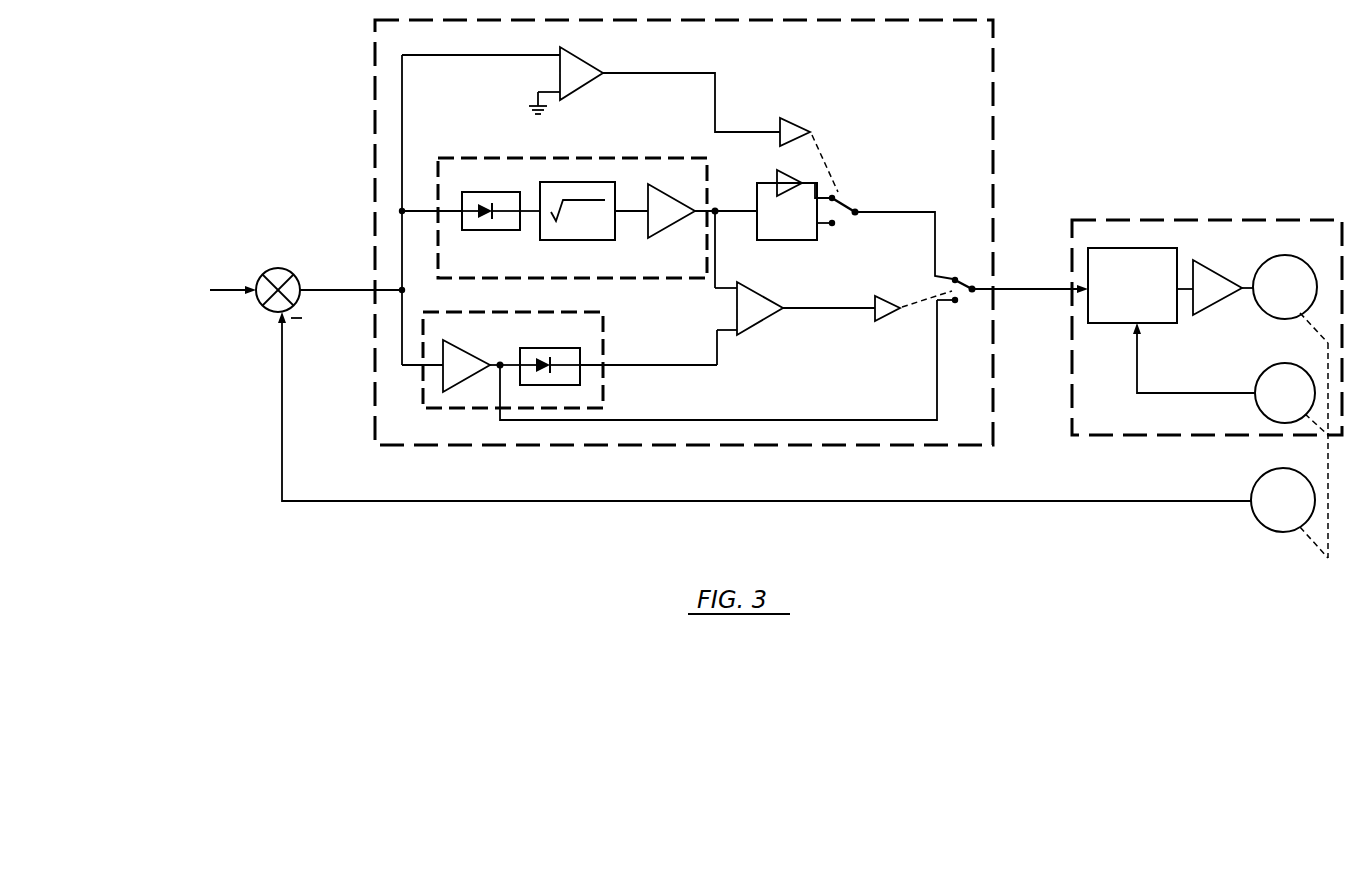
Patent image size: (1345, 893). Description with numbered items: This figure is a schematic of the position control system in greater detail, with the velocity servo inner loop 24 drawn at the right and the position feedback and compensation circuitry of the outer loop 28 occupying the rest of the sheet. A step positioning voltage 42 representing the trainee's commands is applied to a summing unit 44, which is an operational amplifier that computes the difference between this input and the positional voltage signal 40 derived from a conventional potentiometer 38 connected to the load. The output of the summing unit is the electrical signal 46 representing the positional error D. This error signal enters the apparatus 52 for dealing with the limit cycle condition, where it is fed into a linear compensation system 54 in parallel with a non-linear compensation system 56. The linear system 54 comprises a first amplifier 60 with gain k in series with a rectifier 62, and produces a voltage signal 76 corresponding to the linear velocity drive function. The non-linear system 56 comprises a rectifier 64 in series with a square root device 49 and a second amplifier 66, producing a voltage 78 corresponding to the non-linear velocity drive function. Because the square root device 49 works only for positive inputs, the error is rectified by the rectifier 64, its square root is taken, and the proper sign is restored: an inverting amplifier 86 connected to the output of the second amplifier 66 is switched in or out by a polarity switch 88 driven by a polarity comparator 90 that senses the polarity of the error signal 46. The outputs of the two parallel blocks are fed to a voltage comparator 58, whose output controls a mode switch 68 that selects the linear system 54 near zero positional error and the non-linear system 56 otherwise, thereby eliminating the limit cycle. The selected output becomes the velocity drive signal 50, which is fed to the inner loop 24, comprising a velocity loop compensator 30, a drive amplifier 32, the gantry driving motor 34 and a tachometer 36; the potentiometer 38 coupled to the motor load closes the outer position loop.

The velocity servo inner loop 24 is at (1302, 220).
The outer loop 28 is at (729, 406).
The velocity loop compensator 30 is at (1160, 316).
The drive amplifier 32 is at (1216, 272).
The motor 34 is at (1274, 314).
The tachometer 36 is at (1257, 378).
The potentiometer 38 is at (1262, 532).
The positional voltage signal 40 is at (1204, 500).
The positioning voltage 42 is at (220, 283).
The summing unit 44 is at (284, 268).
The electrical signal 46 is at (355, 290).
The square root device 49 is at (576, 182).
The velocity drive signal 50 is at (1040, 289).
The apparatus for dealing with the limit cycle condition 52 is at (1004, 60).
The linear compensation system 54 is at (606, 332).
The non-linear compensation system 56 is at (500, 160).
The voltage comparator 58 is at (760, 294).
The first amplifier 60 is at (466, 350).
The rectifier 62 is at (546, 348).
The rectifier 64 is at (484, 194).
The second amplifier 66 is at (672, 197).
The mode switch 68 is at (893, 298).
The voltage signal 76 is at (620, 368).
The voltage 78 is at (739, 211).
The inverting amplifier 86 is at (778, 176).
The polarity switch 88 is at (840, 156).
The polarity comparator 90 is at (582, 53).